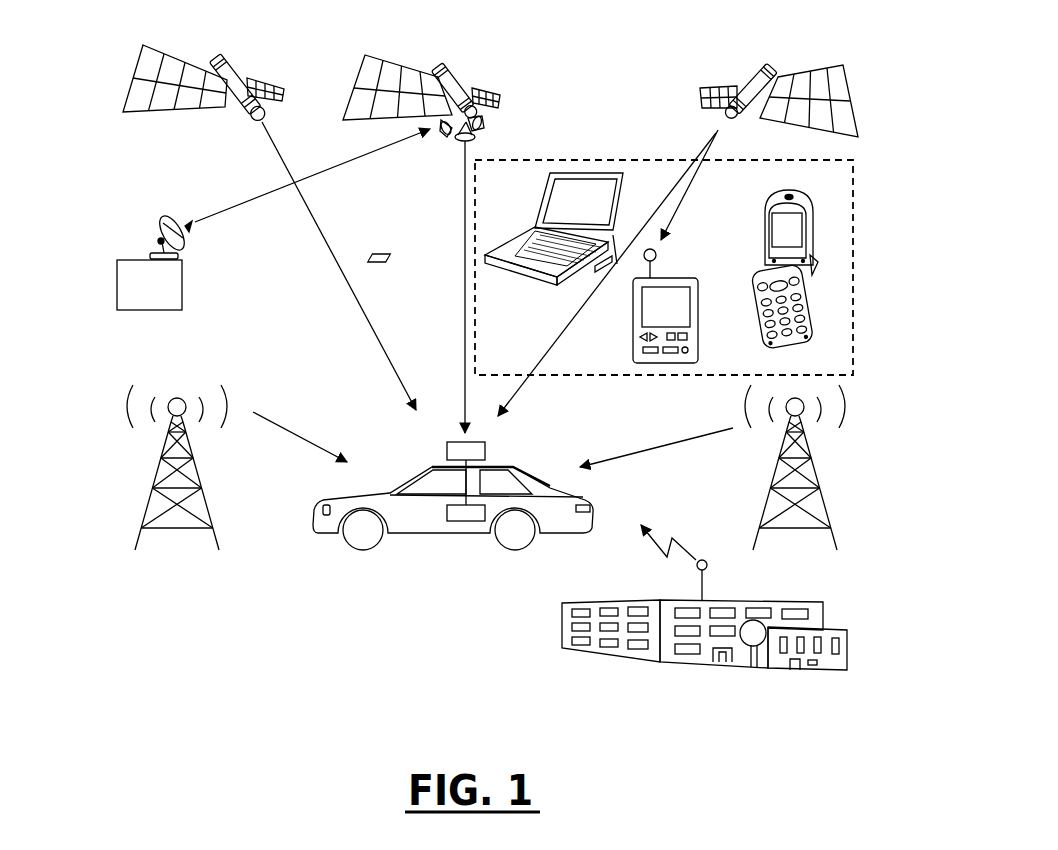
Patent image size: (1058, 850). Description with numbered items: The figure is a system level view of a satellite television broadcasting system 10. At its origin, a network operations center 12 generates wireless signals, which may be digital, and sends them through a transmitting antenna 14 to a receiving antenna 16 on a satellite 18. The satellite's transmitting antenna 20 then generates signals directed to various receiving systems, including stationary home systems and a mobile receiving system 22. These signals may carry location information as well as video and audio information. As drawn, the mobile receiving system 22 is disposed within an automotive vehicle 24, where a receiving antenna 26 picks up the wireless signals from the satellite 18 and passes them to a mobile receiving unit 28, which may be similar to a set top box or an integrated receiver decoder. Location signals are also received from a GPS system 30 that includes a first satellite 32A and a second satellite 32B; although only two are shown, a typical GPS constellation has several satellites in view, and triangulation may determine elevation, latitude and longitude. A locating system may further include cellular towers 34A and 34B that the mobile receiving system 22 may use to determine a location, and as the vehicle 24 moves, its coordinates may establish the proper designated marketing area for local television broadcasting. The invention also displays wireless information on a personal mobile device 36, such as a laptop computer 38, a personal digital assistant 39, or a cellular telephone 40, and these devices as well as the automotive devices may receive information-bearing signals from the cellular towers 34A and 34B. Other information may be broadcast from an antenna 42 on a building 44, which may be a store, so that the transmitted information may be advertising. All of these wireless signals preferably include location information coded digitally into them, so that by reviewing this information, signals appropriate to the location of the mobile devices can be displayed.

The satellite television broadcasting system 10 is at (177, 180).
The network operations center 12 is at (182, 287).
The transmitting antenna 14 is at (190, 240).
The receiving antenna 16 is at (445, 130).
The satellite 18 is at (460, 82).
The transmitting antenna 20 is at (478, 133).
The mobile receiving system 22 is at (469, 481).
The automotive vehicle 24 is at (590, 507).
The receiving antenna 26 is at (447, 450).
The mobile receiving unit 28 is at (470, 521).
The GPS system 30 is at (112, 66).
The first satellite 32A is at (240, 74).
The second satellite 32B is at (757, 72).
The cellular tower 34A is at (200, 475).
The cellular tower 34B is at (773, 475).
The personal mobile device 36 is at (853, 196).
The laptop computer 38 is at (515, 278).
The personal digital assistant 39 is at (688, 278).
The cellular telephone 40 is at (767, 250).
The antenna 42 is at (710, 563).
The building 44 is at (780, 600).